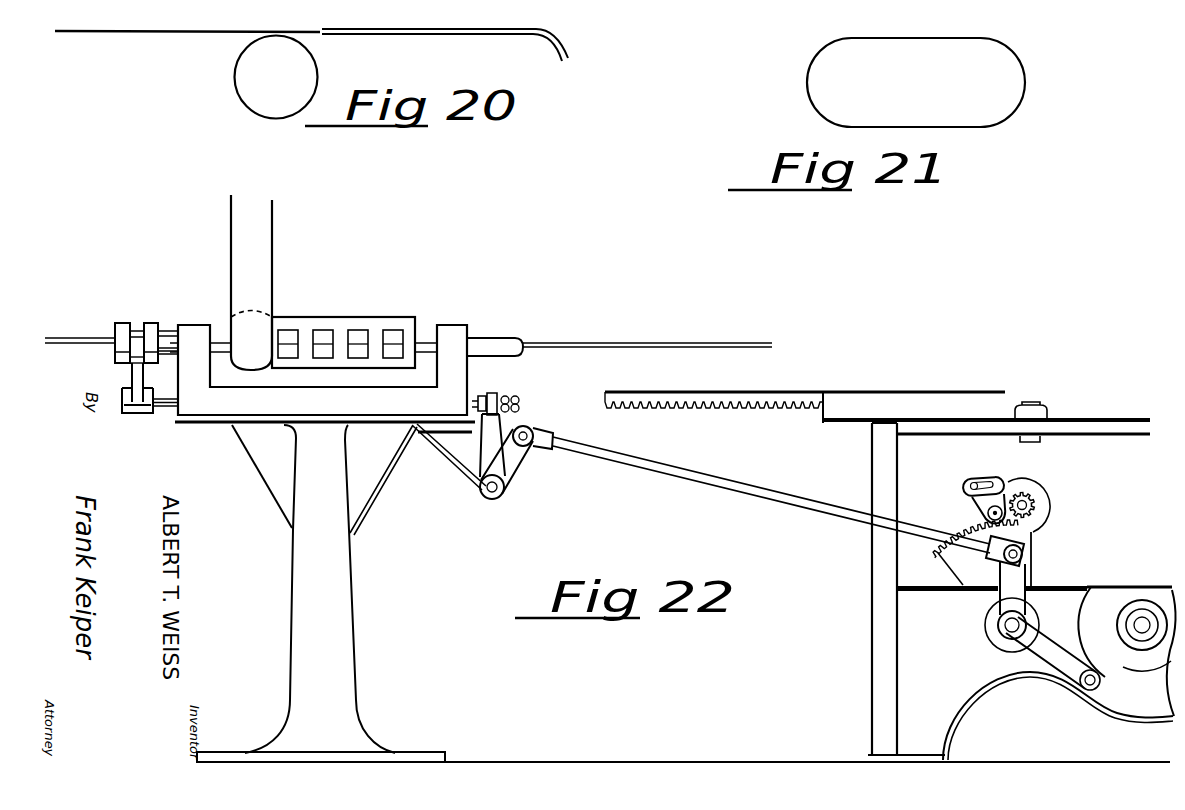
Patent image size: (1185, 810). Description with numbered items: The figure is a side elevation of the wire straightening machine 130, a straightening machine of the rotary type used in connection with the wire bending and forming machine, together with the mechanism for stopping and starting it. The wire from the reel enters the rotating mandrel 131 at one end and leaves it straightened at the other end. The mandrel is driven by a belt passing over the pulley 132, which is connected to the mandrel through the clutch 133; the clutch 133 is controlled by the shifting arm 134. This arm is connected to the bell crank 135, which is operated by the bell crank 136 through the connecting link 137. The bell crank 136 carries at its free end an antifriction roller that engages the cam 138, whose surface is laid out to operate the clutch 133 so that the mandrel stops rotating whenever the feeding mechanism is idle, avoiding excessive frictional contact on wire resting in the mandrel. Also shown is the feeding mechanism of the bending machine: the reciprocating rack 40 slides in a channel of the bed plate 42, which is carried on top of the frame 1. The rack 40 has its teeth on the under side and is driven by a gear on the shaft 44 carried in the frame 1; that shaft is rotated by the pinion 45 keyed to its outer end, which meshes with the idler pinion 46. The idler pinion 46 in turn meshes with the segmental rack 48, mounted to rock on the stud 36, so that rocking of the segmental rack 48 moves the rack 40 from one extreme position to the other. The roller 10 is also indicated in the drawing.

The frame 1 is at (877, 636).
The roller 10 is at (1142, 620).
The stud 36 is at (1005, 629).
The reciprocating rack 40 is at (676, 398).
The bed plate 42 is at (831, 412).
The shaft 44 is at (1025, 500).
The pinion 45 is at (1036, 507).
The idler pinion 46 is at (985, 518).
The segmental rack 48 is at (1035, 567).
The straightening machine 130 is at (400, 395).
The rotating mandrel 131 is at (322, 329).
The pulley 132 is at (258, 330).
The clutch 133 is at (127, 323).
The shifting arm 134 is at (134, 414).
The bell crank 135 is at (497, 452).
The bell crank 136 is at (1038, 652).
The connecting link 137 is at (652, 470).
The cam 138 is at (1125, 660).